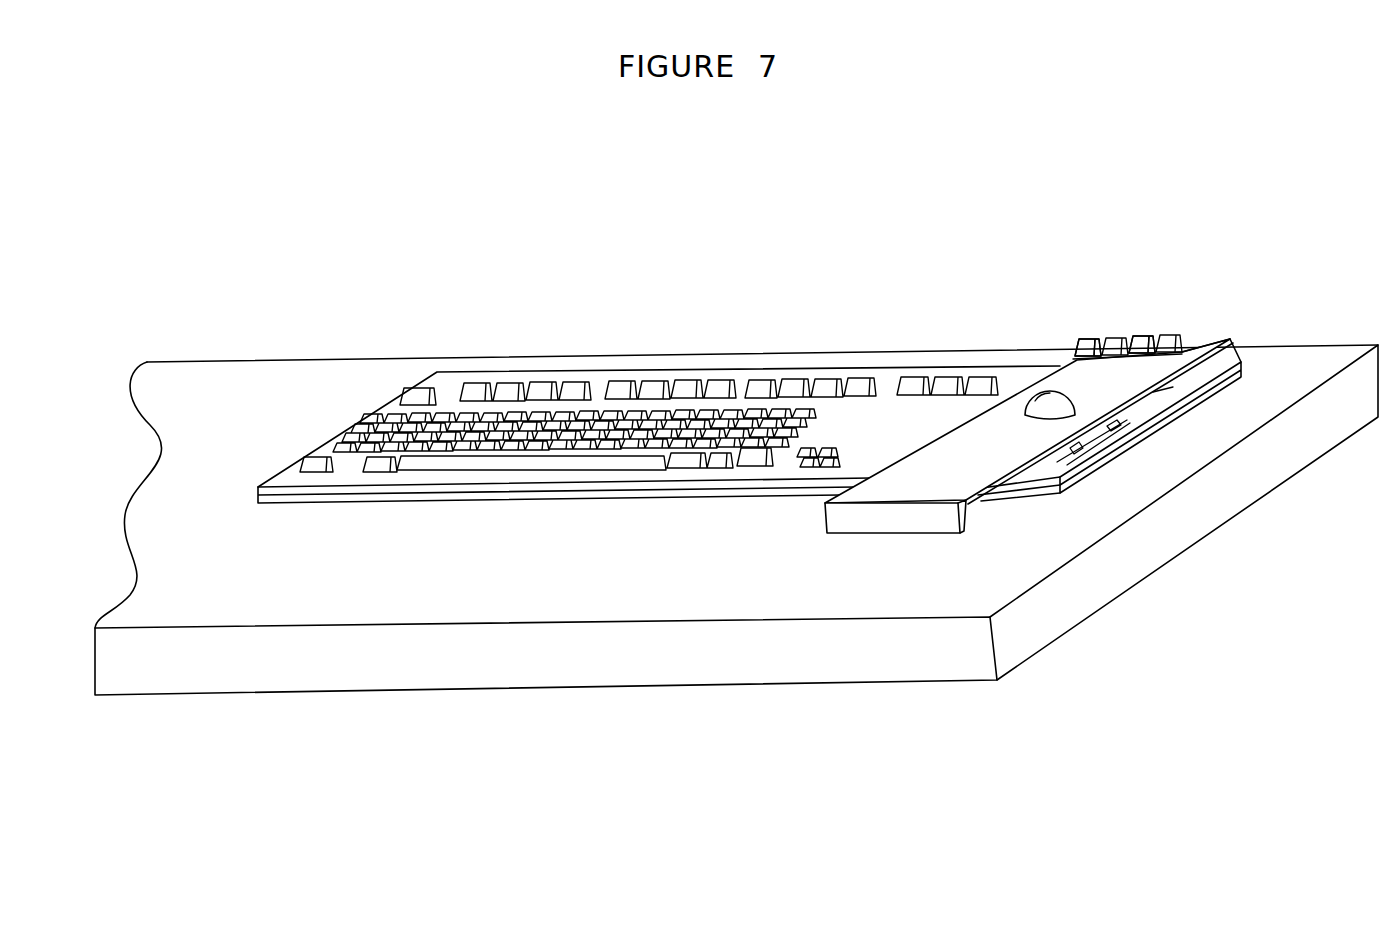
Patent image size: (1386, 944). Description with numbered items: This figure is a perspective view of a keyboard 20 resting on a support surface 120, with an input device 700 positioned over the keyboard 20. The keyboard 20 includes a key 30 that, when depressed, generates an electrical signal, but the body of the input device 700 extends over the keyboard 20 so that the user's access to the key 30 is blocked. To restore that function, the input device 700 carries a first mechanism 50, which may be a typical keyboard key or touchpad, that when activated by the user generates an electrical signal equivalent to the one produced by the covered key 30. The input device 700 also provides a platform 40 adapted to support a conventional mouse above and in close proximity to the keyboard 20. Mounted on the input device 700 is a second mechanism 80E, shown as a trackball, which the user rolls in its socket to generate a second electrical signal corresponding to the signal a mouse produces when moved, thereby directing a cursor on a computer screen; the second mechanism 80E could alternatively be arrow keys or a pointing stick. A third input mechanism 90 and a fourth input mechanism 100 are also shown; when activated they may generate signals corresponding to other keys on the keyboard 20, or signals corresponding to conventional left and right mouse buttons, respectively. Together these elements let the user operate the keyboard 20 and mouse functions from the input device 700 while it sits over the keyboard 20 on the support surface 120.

The keyboard 20 is at (557, 373).
The key 30 is at (1093, 433).
The platform 40 is at (937, 483).
The first mechanism 50 is at (1182, 333).
The second mechanism 80E is at (1045, 400).
The third input mechanism 90 is at (1100, 330).
The fourth input mechanism 100 is at (1135, 333).
The support surface 120 is at (448, 592).
The input device 700 is at (1229, 337).